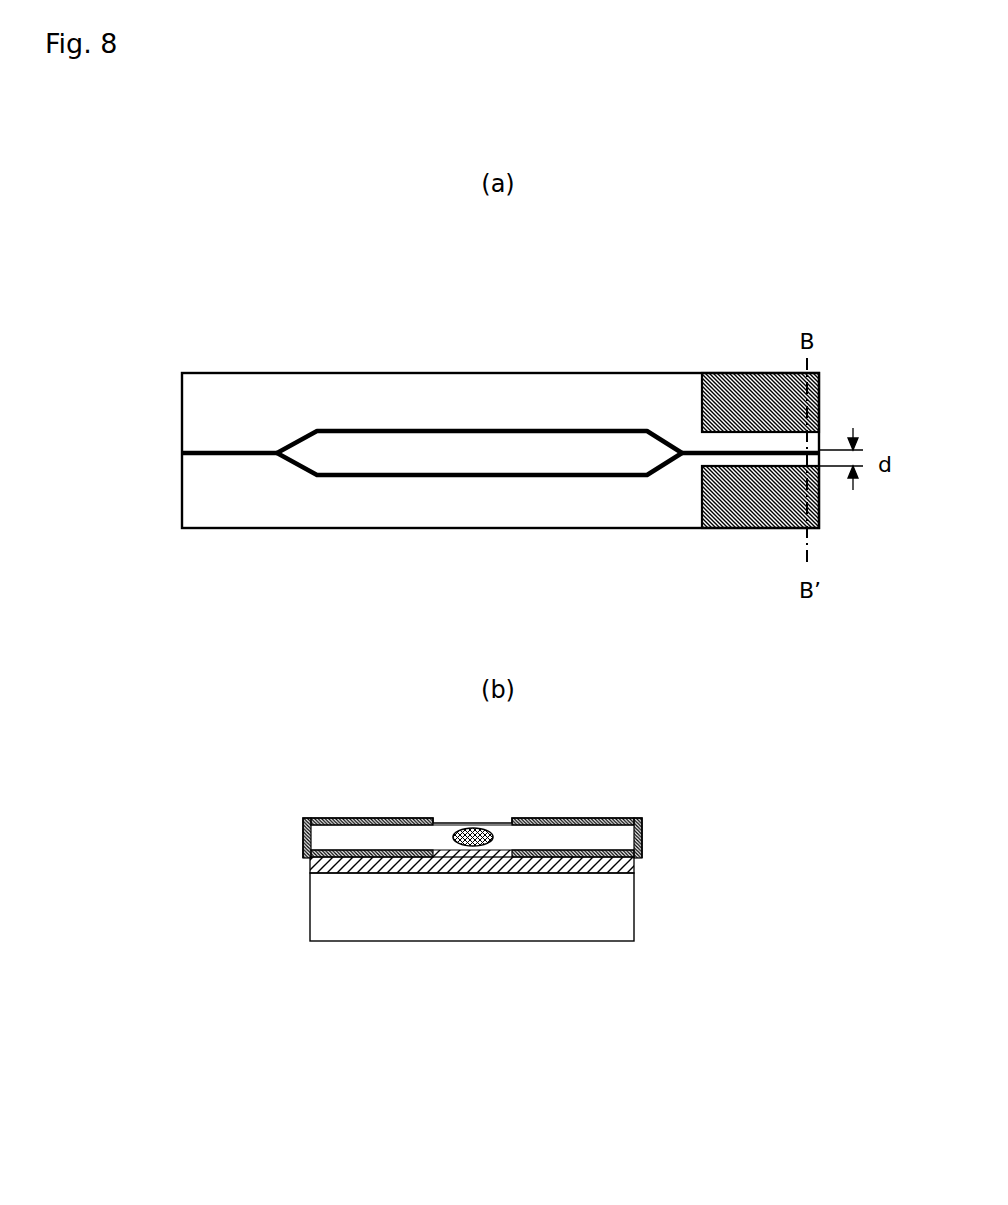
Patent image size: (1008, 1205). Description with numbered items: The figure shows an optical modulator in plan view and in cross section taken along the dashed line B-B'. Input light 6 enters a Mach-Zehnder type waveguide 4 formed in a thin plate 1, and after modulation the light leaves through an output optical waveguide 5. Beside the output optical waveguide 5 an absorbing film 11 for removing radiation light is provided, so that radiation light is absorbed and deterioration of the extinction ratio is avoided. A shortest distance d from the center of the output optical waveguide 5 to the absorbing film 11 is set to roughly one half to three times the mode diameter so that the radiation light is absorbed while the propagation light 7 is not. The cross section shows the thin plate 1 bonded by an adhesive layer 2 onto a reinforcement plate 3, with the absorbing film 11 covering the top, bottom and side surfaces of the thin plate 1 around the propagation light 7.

The thin plate 1 is at (513, 407).
The adhesive layer 2 is at (634, 865).
The reinforcement plate 3 is at (563, 907).
The Mach-Zehnder type waveguide 4 is at (563, 478).
The output optical waveguide 5 is at (717, 447).
The input light 6 is at (158, 447).
The propagation light 7 is at (474, 828).
The absorbing film for removing radiation light 11 is at (737, 492).